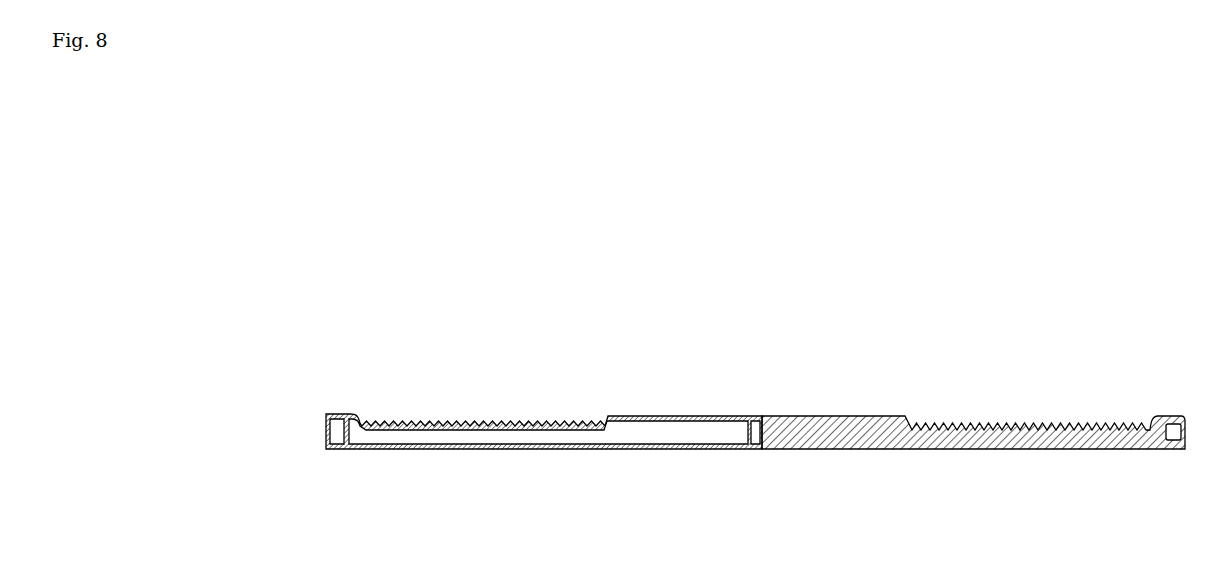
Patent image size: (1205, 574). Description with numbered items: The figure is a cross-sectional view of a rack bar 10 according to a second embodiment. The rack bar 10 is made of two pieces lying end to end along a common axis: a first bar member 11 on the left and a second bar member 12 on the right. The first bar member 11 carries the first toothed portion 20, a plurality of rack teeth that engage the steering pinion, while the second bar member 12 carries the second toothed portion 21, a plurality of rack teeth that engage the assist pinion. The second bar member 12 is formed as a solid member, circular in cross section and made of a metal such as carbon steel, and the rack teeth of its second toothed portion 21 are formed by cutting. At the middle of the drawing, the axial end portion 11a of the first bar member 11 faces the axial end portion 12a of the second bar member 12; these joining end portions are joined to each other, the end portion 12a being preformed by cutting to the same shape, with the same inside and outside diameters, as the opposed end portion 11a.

The rack bar 10 is at (1074, 292).
The first bar member 11 is at (637, 449).
The axial end portion of first bar member 11a is at (748, 416).
The second bar member 12 is at (905, 449).
The axial end portion of second bar member 12a is at (755, 416).
The first toothed portion 20 is at (488, 423).
The second toothed portion 21 is at (1027, 423).